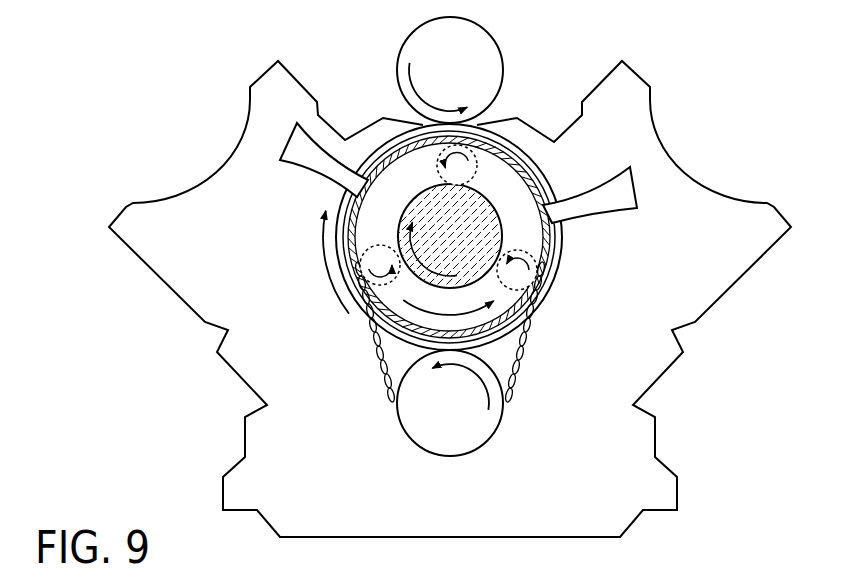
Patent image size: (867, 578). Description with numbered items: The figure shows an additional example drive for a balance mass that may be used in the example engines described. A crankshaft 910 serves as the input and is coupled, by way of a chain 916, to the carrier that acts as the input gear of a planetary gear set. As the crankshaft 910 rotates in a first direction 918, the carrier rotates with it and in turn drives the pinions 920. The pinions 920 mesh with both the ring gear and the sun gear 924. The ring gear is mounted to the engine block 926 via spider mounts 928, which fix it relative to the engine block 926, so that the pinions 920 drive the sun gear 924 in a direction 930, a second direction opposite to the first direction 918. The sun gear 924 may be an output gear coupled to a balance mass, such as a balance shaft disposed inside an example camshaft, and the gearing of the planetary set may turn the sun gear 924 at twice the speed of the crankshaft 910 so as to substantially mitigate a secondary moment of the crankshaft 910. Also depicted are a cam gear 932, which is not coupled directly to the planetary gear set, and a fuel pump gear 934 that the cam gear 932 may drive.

The crankshaft 910 is at (497, 430).
The chain 916 is at (525, 347).
The first direction 918 is at (475, 397).
The pinions 920 is at (514, 250).
The sun gear 924 is at (435, 219).
The engine block 926 is at (283, 517).
The spider mounts 928 is at (597, 187).
The direction 930 is at (447, 271).
The cam gear 932 is at (552, 258).
The fuel pump gear 934 is at (503, 68).